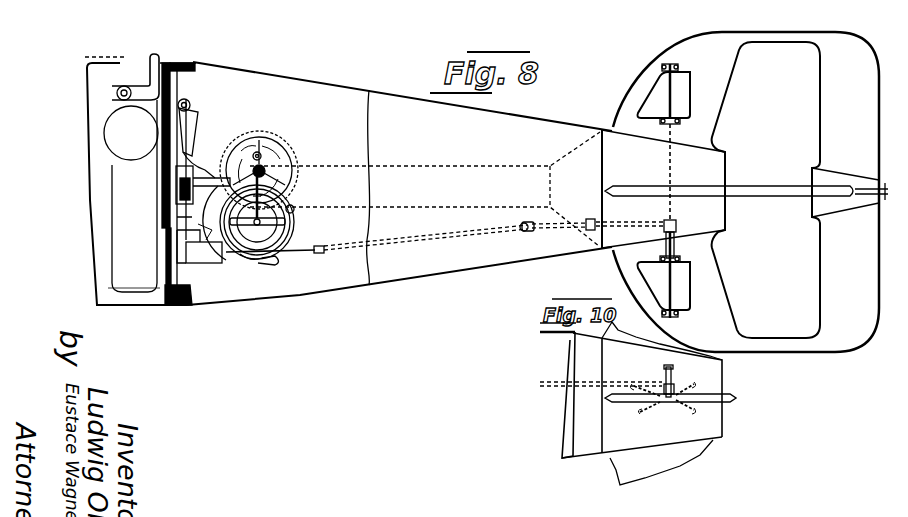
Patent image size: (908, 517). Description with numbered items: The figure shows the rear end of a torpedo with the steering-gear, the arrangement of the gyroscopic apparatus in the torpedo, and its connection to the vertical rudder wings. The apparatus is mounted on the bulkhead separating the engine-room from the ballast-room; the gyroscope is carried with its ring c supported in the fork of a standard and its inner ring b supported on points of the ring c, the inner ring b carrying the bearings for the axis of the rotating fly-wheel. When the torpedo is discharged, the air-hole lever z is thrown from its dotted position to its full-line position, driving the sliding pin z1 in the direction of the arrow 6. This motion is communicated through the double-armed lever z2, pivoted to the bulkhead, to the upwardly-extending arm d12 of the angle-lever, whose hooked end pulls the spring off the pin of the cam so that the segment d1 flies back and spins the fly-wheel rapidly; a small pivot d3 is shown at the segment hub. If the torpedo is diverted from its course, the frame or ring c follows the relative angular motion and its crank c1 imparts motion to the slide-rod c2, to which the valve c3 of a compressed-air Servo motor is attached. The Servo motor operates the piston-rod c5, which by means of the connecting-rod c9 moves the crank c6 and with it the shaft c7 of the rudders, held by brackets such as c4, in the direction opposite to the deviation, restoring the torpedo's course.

In FIG. 8, the air-hole lever z is at (152, 66).
In FIG. 8, the sliding pin z1 is at (188, 102).
In FIG. 8, the double-armed lever z2 is at (186, 120).
In FIG. 8, the arrow 6 is at (212, 77).
In FIG. 8, the segment d1 is at (287, 150).
In FIG. 8, the gear pivot d3 is at (261, 157).
In FIG. 8, the upwardly-extending arm d12 is at (192, 160).
In FIG. 8, the inner ring b is at (287, 221).
In FIG. 8, the slide-rod c2 is at (199, 243).
In FIG. 8, the ring c is at (284, 251).
In FIG. 8, the piston-rod c5 is at (282, 254).
In FIG. 8, the connecting-rod c9 is at (399, 240).
In FIG. 8, the upper rudder bracket c4 is at (663, 94).
In FIG. 8, the crank c1 is at (663, 286).
In FIG. 10, the crank c1 is at (648, 404).
In FIG. 8, the shaft c7 is at (672, 160).
In FIG. 8, the crank c6 is at (677, 226).
In FIG. 10, the crank c6 is at (676, 393).
In FIG. 8, the valve c3 is at (675, 245).
In FIG. 10, the valve c3 is at (673, 373).